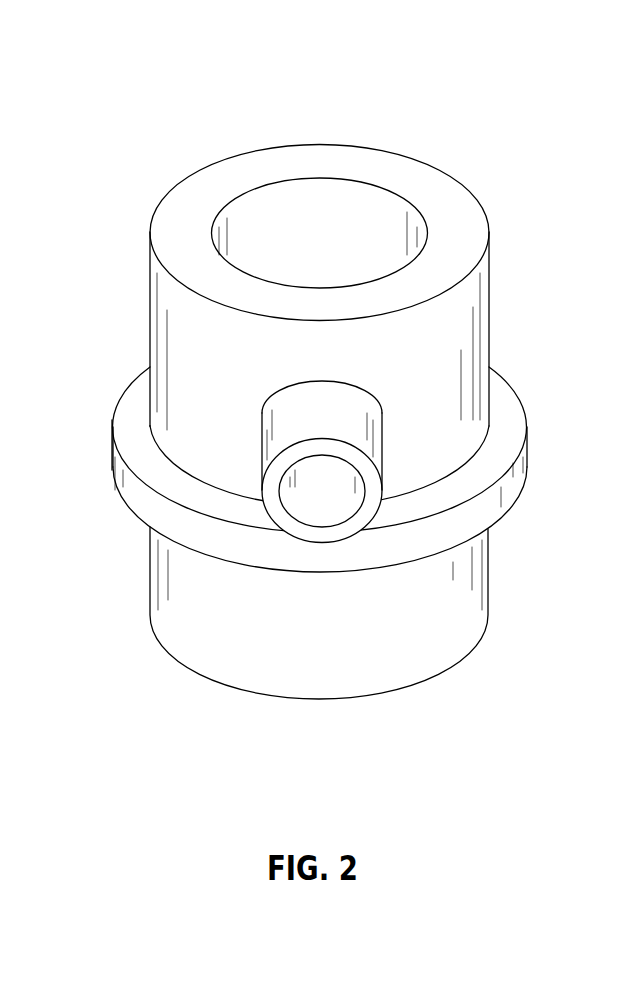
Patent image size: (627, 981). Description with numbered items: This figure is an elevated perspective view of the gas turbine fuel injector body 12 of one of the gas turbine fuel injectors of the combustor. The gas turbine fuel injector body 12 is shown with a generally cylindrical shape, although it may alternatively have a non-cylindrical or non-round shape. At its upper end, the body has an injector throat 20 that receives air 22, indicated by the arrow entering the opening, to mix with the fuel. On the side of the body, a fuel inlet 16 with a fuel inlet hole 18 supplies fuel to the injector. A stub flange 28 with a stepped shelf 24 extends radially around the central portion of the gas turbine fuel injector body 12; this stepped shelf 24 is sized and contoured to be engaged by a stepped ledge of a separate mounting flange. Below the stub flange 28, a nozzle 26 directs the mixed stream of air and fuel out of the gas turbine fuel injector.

The gas turbine fuel injector body 12 is at (316, 395).
The fuel inlet 16 is at (360, 425).
The fuel inlet hole 18 is at (307, 490).
The injector throat 20 is at (233, 246).
The air 22 is at (318, 207).
The stepped shelf 24 is at (502, 427).
The nozzle 26 is at (403, 612).
The stub flange 28 is at (130, 490).